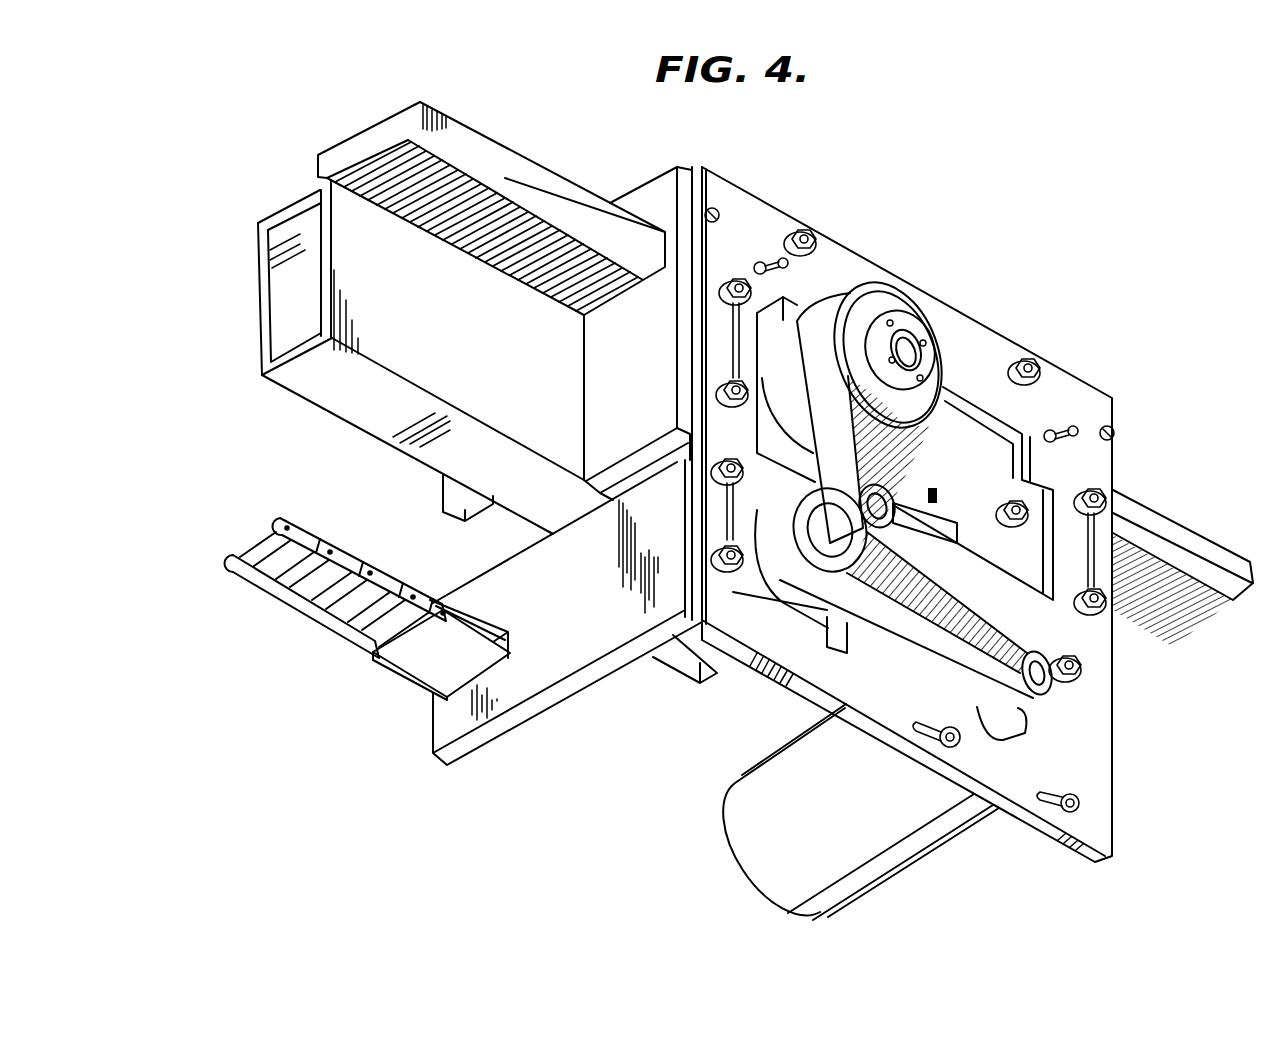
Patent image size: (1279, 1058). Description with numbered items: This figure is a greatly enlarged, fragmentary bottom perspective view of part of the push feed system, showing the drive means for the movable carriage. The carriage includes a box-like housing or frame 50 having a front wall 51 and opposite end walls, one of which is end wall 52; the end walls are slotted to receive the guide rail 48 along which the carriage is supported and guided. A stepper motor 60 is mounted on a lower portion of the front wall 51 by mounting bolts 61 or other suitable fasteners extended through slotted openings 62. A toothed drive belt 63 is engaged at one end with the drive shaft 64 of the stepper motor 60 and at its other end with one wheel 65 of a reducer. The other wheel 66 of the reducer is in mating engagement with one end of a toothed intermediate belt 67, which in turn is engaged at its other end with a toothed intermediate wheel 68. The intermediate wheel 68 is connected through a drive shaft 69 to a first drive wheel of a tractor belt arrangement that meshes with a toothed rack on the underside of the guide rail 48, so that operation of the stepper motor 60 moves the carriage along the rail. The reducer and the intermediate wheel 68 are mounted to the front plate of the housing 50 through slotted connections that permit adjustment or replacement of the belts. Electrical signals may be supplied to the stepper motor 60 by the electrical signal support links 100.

The guide rail 48 is at (515, 166).
The box-like housing or frame 50 is at (987, 323).
The front wall 51 is at (1087, 453).
The end wall 52 is at (643, 371).
The stepper motor 60 is at (923, 850).
The mounting bolts 61 is at (1070, 794).
The slotted openings 62 is at (1038, 797).
The toothed drive belt 63 is at (917, 650).
The drive shaft 64 is at (1055, 690).
The wheel of reducer 65 is at (897, 550).
The other wheel of reducer 66 is at (782, 612).
The toothed intermediate belt 67 is at (905, 473).
The toothed intermediate wheel 68 is at (920, 397).
The drive shaft 69 is at (778, 408).
The electrical signal support links 100 is at (340, 552).